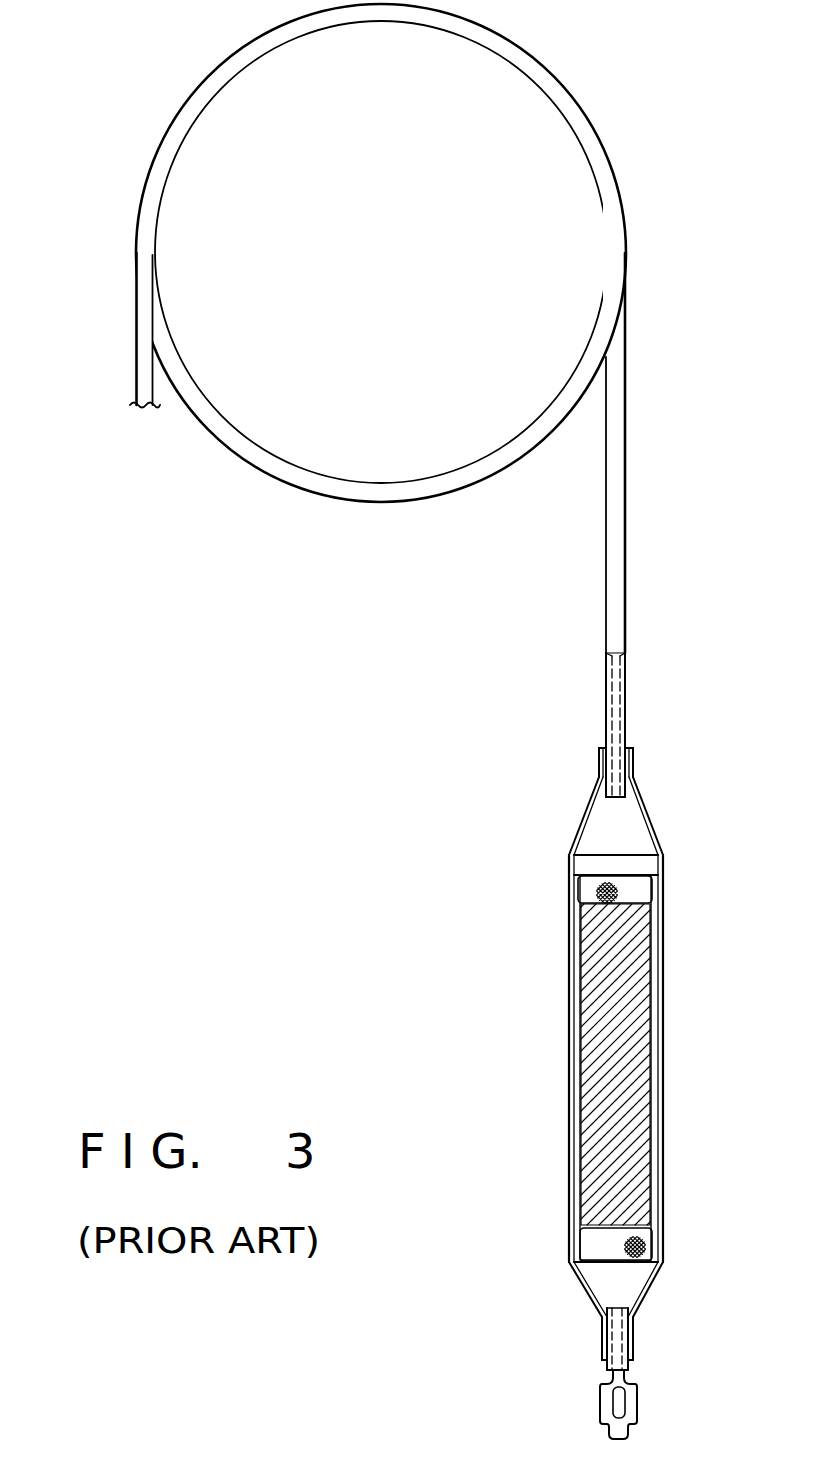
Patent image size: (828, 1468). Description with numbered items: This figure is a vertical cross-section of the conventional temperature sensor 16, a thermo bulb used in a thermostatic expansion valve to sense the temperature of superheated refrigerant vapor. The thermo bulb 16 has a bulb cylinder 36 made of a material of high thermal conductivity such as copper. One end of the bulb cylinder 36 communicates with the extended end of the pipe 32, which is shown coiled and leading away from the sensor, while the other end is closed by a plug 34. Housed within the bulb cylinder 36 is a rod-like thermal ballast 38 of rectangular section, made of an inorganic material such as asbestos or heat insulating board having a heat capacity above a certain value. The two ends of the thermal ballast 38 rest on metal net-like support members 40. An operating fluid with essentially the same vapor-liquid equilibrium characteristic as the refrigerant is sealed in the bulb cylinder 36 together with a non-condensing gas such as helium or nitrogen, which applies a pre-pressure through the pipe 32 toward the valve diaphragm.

The temperature sensor 16 is at (569, 1028).
The pipe 32 is at (136, 372).
The plug 34 is at (608, 1376).
The bulb cylinder 36 is at (569, 1132).
The thermal ballast 38 is at (645, 1038).
The support member 40 is at (647, 888).